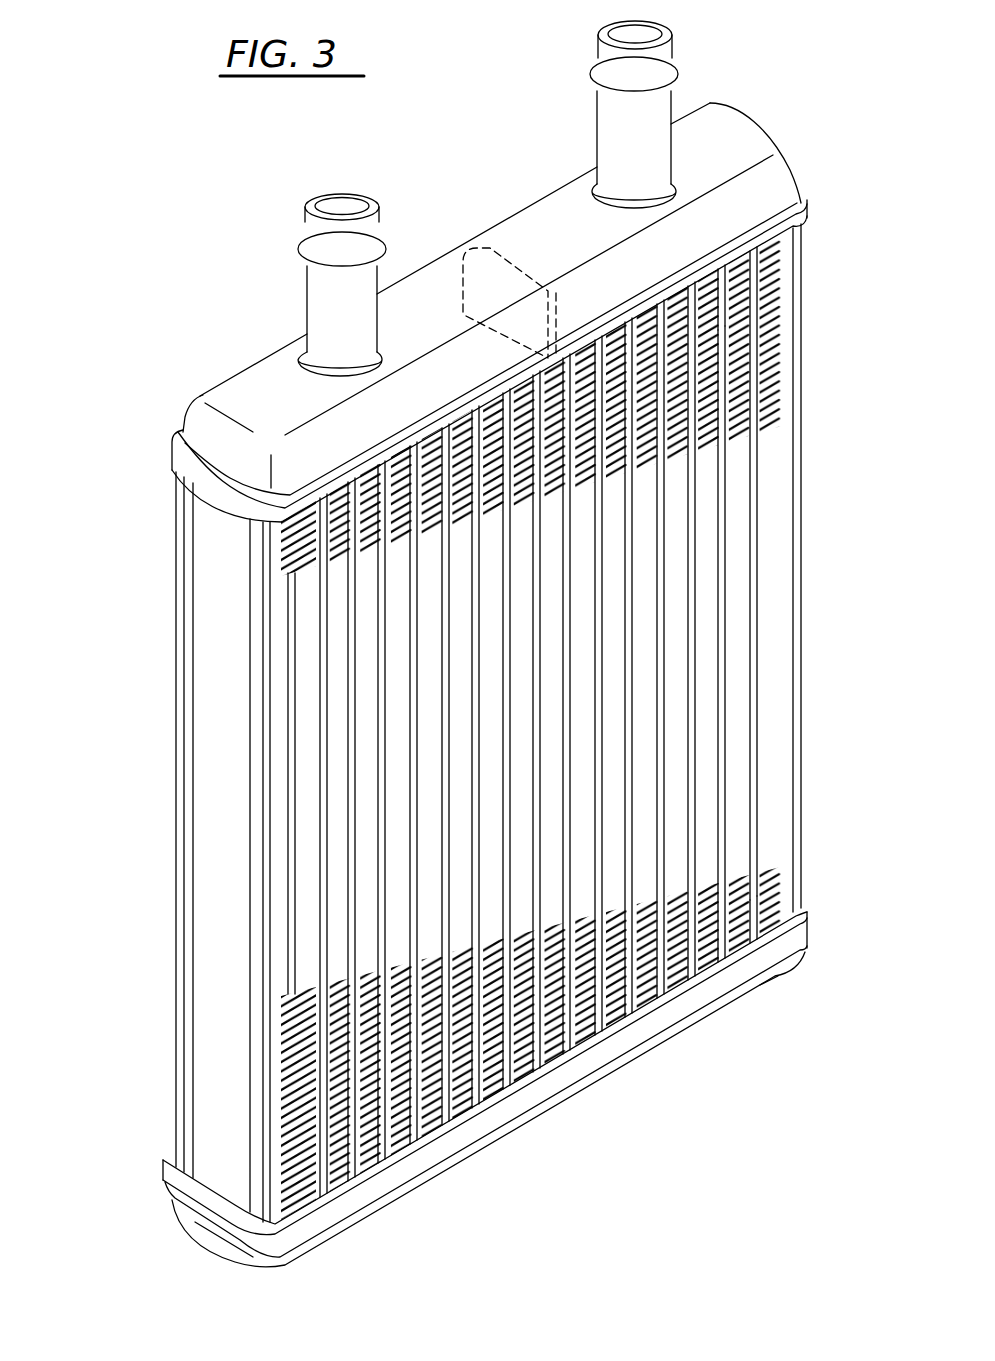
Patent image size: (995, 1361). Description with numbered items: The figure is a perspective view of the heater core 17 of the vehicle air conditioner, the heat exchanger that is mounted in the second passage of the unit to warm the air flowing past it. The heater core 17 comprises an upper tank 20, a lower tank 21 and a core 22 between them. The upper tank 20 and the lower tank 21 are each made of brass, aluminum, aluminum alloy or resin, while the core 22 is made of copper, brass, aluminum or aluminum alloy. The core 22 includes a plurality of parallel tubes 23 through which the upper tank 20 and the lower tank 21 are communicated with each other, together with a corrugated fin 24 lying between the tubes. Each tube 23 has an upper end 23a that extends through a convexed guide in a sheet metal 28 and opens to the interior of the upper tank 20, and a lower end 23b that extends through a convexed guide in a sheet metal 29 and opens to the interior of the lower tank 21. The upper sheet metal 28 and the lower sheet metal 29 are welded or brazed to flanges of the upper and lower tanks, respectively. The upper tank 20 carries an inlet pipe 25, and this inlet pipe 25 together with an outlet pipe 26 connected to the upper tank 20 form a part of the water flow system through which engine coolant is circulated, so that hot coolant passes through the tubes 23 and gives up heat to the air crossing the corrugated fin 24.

The heater core 17 is at (170, 675).
The upper tank 20 is at (773, 173).
The lower tank 21 is at (595, 1083).
The core 22 is at (643, 613).
The tube 23 is at (762, 783).
The upper end 23a is at (723, 287).
The lower end 23b is at (740, 930).
The corrugated fin 24 is at (760, 430).
The inlet pipe 25 is at (664, 100).
The outlet pipe 26 is at (318, 305).
The sheet metal 28 is at (745, 249).
The sheet metal 29 is at (707, 993).